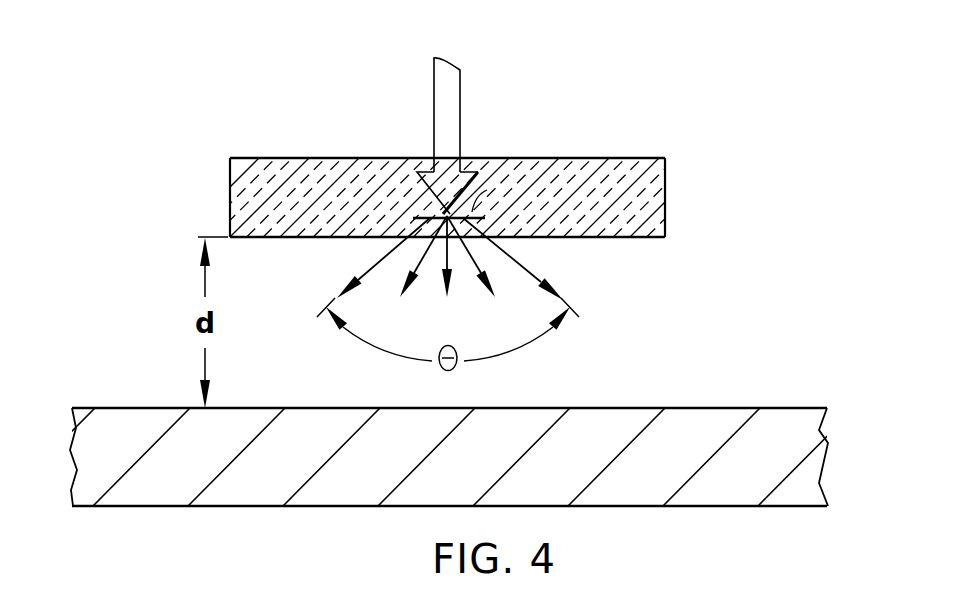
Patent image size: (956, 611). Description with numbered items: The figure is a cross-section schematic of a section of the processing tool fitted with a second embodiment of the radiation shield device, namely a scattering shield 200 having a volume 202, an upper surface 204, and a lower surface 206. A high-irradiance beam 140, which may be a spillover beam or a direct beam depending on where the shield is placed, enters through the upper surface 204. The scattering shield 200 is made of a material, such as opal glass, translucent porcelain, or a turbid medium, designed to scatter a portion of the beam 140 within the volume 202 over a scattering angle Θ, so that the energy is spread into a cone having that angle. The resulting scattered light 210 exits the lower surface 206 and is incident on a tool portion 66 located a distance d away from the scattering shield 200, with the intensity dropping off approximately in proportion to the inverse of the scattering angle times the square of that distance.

The scattering shield 200 is at (509, 118).
The volume 202 is at (666, 186).
The upper surface 204 is at (643, 158).
The lower surface 206 is at (651, 238).
The high-irradiance beam 140 is at (434, 67).
The scattered light 210 is at (413, 218).
The tool portion 66 is at (773, 408).